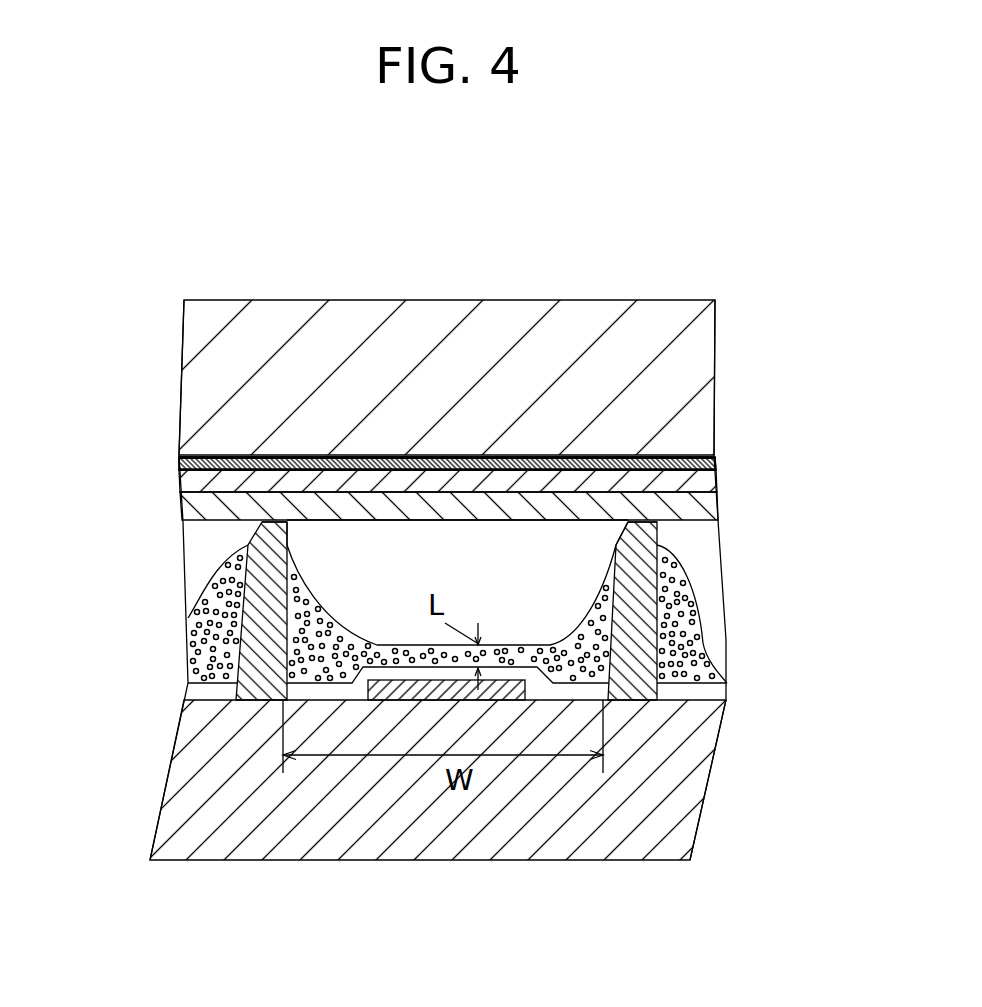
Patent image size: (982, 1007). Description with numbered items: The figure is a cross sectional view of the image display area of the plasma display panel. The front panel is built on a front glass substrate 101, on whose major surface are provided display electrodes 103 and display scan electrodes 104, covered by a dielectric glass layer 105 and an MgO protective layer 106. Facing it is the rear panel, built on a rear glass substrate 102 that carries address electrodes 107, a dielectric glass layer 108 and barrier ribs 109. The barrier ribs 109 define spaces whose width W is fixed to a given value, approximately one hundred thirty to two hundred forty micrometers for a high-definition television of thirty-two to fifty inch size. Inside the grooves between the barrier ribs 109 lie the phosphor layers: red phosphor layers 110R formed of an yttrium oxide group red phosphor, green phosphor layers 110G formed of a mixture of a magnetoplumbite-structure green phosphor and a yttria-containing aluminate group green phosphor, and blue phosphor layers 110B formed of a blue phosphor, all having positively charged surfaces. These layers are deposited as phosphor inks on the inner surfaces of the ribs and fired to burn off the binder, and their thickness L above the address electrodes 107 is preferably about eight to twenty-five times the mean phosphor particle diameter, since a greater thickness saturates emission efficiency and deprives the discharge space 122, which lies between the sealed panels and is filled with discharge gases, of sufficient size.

The front glass substrate 101 is at (700, 370).
The rear glass substrate 102 is at (693, 772).
The display electrodes 103 is at (713, 460).
The display scan electrodes 104 is at (447, 463).
The dielectric glass layer 105 is at (717, 485).
The MgO protective layer 106 is at (720, 512).
The address electrodes 107 is at (367, 683).
The dielectric glass layer 108 is at (350, 628).
The barrier ribs 109 is at (627, 535).
The red phosphor layers 110R is at (195, 625).
The green phosphor layers 110G is at (562, 675).
The blue phosphor layers 110B is at (708, 651).
The discharge space 122 is at (557, 577).